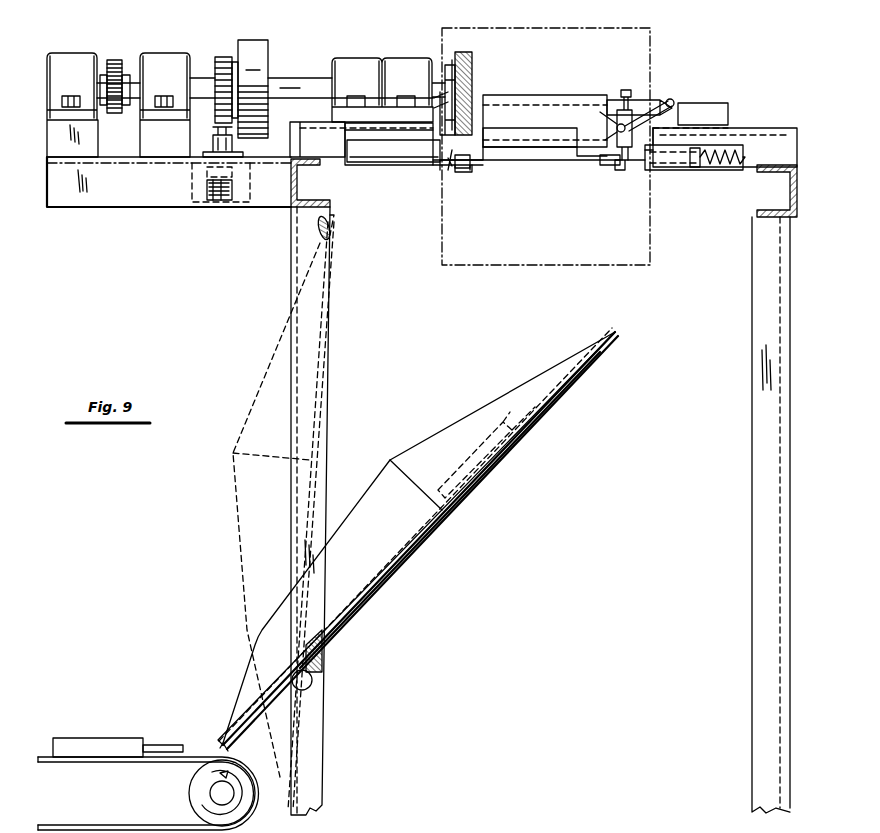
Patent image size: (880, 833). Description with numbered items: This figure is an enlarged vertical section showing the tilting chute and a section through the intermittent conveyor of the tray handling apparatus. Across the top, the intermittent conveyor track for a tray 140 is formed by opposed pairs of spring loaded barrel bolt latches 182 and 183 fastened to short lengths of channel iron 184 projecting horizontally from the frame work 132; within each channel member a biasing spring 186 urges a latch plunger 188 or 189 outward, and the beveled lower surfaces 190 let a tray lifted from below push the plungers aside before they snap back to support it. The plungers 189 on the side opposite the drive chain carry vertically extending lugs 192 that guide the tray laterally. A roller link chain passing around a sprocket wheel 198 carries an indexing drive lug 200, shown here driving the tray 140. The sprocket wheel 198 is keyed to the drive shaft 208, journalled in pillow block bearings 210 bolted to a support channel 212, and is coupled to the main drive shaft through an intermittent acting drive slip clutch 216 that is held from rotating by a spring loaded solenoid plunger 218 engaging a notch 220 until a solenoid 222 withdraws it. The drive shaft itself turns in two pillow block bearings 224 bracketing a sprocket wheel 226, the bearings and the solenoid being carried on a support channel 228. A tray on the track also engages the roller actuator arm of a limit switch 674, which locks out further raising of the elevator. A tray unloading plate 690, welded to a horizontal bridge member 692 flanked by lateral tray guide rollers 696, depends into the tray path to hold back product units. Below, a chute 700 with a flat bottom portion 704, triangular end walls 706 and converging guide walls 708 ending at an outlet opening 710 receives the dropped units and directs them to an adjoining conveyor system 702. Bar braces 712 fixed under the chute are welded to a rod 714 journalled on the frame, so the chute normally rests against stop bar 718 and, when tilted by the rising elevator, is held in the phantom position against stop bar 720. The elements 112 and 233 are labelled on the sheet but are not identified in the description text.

The label applying head 112 is at (626, 40).
The frame work 132 is at (300, 175).
The tray 140 is at (556, 149).
The spring loaded barrel bolt latch 182 is at (356, 164).
The spring loaded barrel bolt latch 183 is at (692, 172).
The channel iron 184 is at (756, 128).
The biasing spring 186 is at (728, 172).
The latch plunger 188 is at (464, 170).
The latch plunger 189 is at (620, 170).
The beveled lower surface 190 is at (466, 156).
The vertically extending lug 192 is at (618, 128).
The sprocket wheel 198 is at (472, 79).
The indexing drive lug 200 is at (456, 170).
The drive shaft 208 is at (314, 77).
The pillow block bearing 210 is at (370, 58).
The support channel 212 is at (300, 124).
The intermittent acting drive slip clutch 216 is at (262, 40).
The spring loaded solenoid plunger 218 is at (205, 176).
The notch 220 is at (213, 130).
The solenoid 222 is at (206, 185).
The pillow block bearing 224 is at (90, 52).
The sprocket wheel 226 is at (116, 60).
The support channel 228 is at (92, 209).
The plate 233 is at (438, 146).
The limit switch 674 is at (708, 103).
The tray unloading plate 690 is at (560, 95).
The horizontal bridge member 692 is at (614, 100).
The lateral tray guide roller 696 is at (630, 103).
The chute 700 is at (452, 531).
The adjoining conveyor system 702 is at (194, 757).
The flat bottom portion 704 is at (556, 384).
The triangular end wall 706 is at (491, 405).
The converging guide wall 708 is at (368, 488).
The outlet opening 710 is at (226, 738).
The bar brace 712 is at (402, 558).
The rod 714 is at (312, 680).
The stop bar 718 is at (318, 658).
The stop bar 720 is at (320, 230).